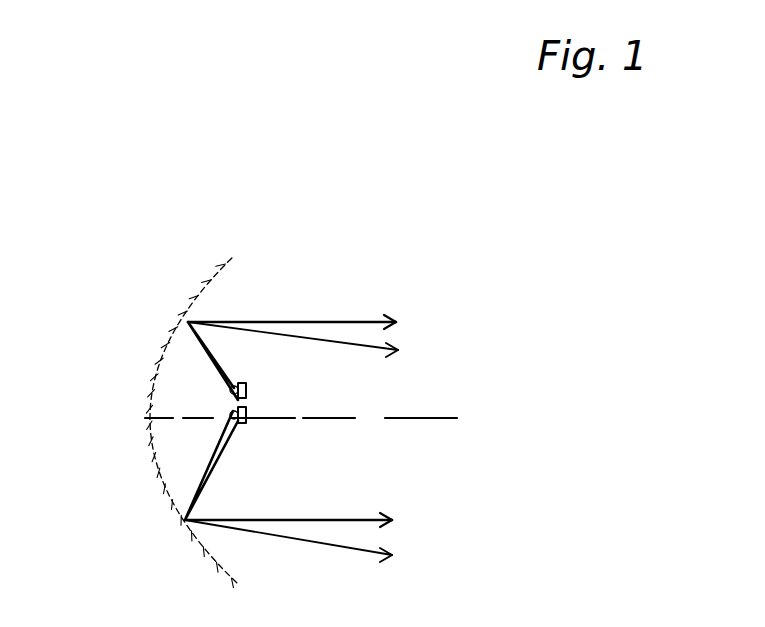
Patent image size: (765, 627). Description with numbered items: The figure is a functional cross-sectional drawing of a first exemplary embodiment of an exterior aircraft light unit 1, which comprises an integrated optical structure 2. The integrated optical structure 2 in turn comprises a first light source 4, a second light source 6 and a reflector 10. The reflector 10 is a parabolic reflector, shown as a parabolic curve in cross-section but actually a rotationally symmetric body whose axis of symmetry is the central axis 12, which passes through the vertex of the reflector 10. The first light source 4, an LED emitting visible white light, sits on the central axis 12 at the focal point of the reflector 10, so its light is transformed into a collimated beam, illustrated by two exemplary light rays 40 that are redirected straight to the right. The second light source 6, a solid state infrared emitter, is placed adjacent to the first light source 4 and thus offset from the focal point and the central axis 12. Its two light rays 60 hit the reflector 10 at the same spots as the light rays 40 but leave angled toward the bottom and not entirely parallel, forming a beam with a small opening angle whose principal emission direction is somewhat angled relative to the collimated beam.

The exterior aircraft light unit 1 is at (507, 242).
The integrated optical structure 2 is at (98, 453).
The first light source 4 is at (247, 413).
The second light source 6 is at (247, 388).
The reflector 10 is at (232, 262).
The central axis 12 is at (418, 415).
The light rays 40 is at (318, 316).
The light rays 60 is at (362, 348).